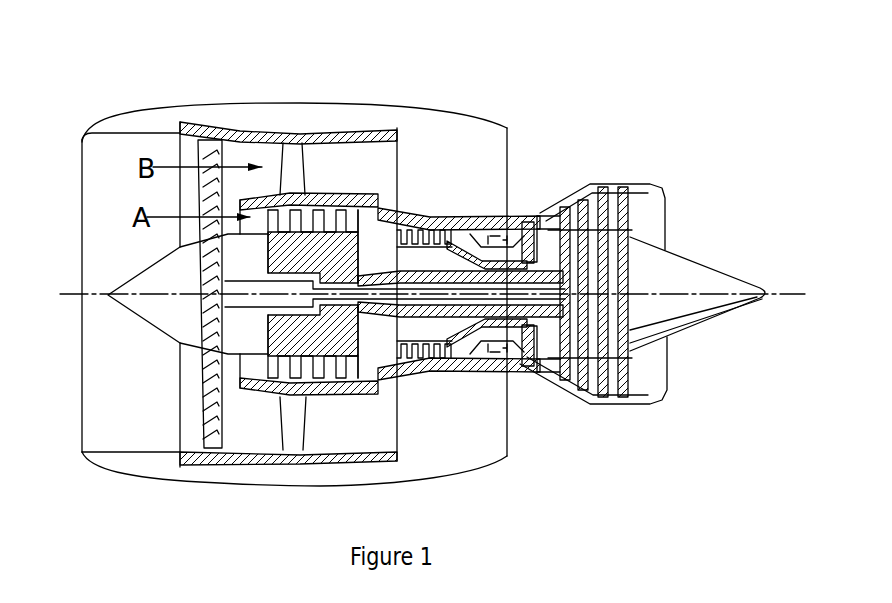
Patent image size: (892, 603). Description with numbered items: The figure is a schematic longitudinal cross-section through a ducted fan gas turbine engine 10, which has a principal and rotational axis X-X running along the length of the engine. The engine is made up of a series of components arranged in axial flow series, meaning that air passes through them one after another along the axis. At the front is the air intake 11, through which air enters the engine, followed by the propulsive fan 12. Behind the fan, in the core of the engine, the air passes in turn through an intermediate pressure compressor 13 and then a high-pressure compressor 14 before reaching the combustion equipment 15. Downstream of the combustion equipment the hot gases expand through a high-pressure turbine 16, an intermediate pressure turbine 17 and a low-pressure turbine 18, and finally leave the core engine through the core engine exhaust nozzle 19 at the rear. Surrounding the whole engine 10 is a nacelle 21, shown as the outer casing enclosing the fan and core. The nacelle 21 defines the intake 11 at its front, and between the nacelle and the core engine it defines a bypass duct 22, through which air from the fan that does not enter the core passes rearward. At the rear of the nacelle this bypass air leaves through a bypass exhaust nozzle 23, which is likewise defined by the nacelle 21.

The ducted fan gas turbine engine 10 is at (146, 84).
The air intake 11 is at (128, 137).
The propulsive fan 12 is at (197, 405).
The intermediate pressure compressor 13 is at (325, 363).
The high-pressure compressor 14 is at (422, 236).
The combustion equipment 15 is at (462, 357).
The high-pressure turbine 16 is at (527, 368).
The intermediate pressure turbine 17 is at (560, 212).
The low-pressure turbine 18 is at (583, 387).
The core engine exhaust nozzle 19 is at (660, 190).
The nacelle 21 is at (298, 55).
The bypass duct 22 is at (480, 168).
The bypass exhaust nozzle 23 is at (507, 128).